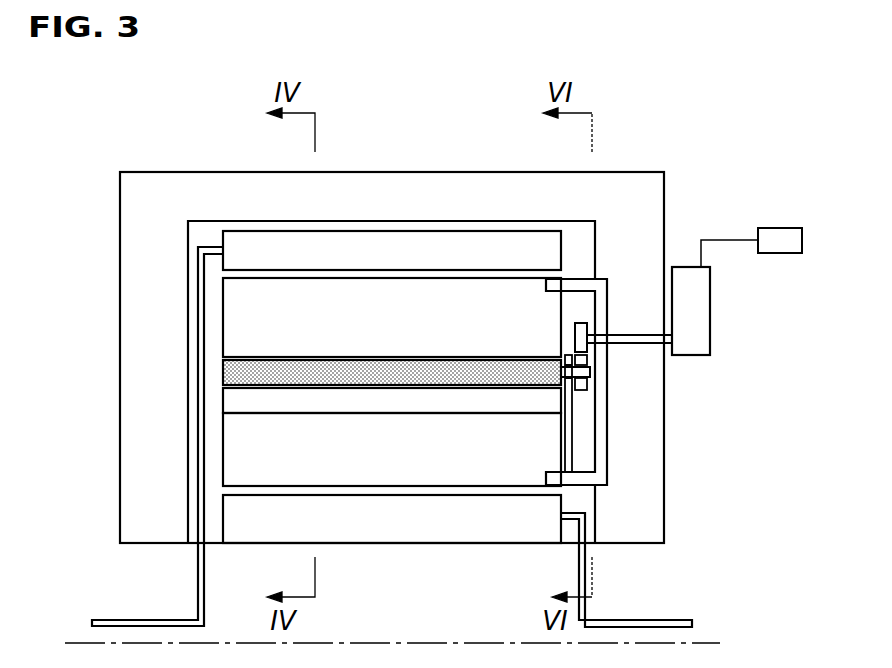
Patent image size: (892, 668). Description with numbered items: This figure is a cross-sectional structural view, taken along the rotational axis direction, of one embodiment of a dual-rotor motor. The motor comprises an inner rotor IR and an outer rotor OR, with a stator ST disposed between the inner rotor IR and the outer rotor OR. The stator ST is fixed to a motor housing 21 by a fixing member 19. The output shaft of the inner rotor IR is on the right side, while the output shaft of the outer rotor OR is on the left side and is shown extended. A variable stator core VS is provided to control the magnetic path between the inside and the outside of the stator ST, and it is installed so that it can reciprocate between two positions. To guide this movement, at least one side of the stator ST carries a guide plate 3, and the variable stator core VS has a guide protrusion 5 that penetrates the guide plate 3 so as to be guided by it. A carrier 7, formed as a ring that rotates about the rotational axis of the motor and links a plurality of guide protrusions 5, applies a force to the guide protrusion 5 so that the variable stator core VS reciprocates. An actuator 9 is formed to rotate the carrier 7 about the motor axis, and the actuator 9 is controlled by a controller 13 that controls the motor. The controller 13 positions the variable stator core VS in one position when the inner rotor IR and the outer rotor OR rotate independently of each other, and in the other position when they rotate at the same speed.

The motor housing 21 is at (642, 187).
The fixing member 19 is at (603, 462).
The controller 13 is at (783, 235).
The actuator 9 is at (703, 307).
The carrier 7 is at (588, 383).
The guide protrusion 5 is at (590, 369).
The guide plate 3 is at (575, 420).
The outer rotor OR is at (383, 250).
The inner rotor IR is at (467, 530).
The variable stator core VS is at (358, 372).
The stator ST is at (218, 279).